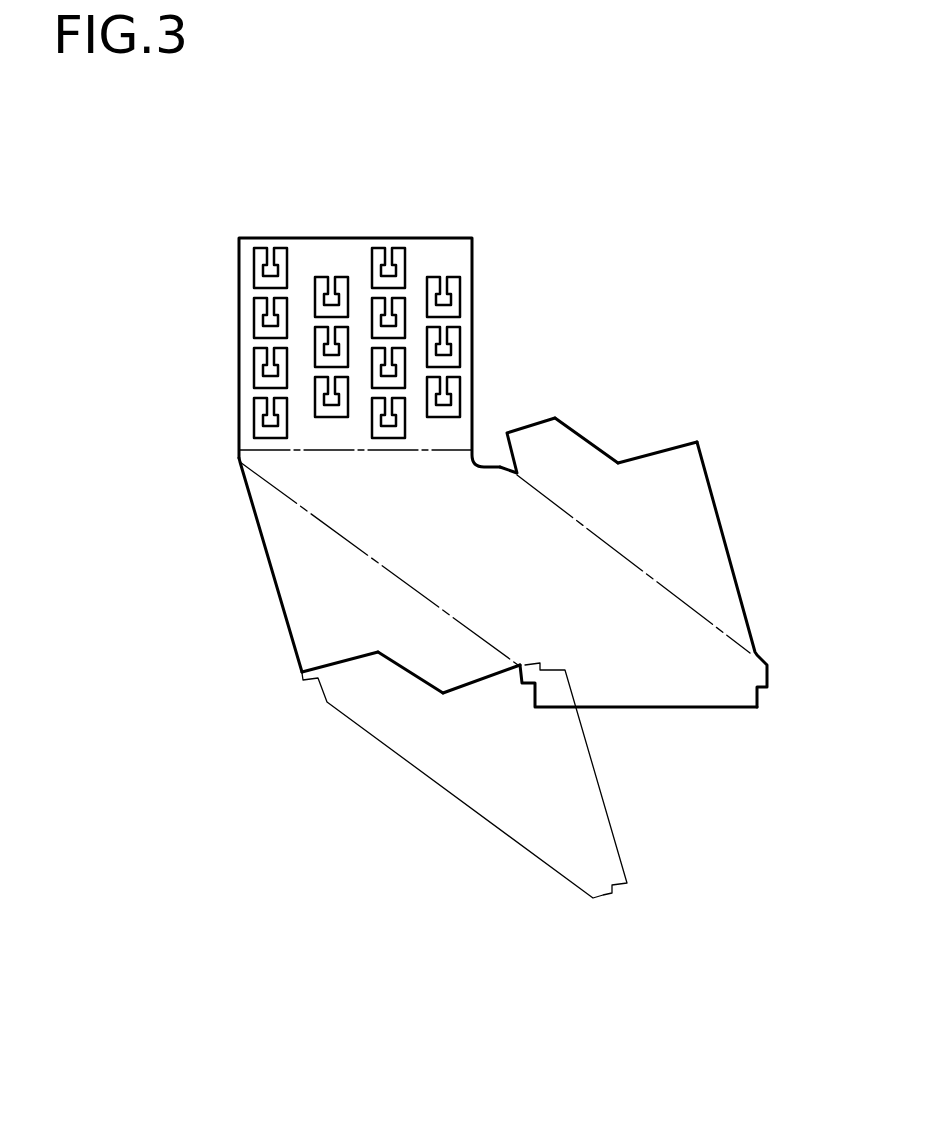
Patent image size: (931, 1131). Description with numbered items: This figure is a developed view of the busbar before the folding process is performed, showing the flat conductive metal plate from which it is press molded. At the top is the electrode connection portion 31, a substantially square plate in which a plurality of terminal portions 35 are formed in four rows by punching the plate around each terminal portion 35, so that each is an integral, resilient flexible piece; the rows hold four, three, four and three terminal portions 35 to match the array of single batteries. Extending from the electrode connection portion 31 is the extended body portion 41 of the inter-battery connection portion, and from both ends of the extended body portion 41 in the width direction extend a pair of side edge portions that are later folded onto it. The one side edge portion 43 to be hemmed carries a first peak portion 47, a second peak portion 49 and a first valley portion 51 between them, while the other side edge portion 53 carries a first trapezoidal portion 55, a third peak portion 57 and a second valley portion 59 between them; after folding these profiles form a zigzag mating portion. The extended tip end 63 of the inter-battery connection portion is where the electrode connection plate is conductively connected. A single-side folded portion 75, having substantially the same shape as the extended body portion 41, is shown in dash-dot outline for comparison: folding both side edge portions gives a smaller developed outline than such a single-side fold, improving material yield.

The electrode connection portion 31 is at (449, 238).
The terminal portion 35 is at (259, 272).
The extended body portion 41 is at (668, 660).
The side edge portion 43 is at (268, 522).
The first peak portion 47 is at (305, 673).
The second peak portion 49 is at (442, 695).
The first valley portion 51 is at (378, 655).
The other side edge portion 53 is at (707, 515).
The first trapezoidal portion 55 is at (533, 418).
The third peak portion 57 is at (697, 440).
The second valley portion 59 is at (620, 460).
The extended tip end 63 is at (745, 697).
The single-side folded portion 75 is at (575, 883).